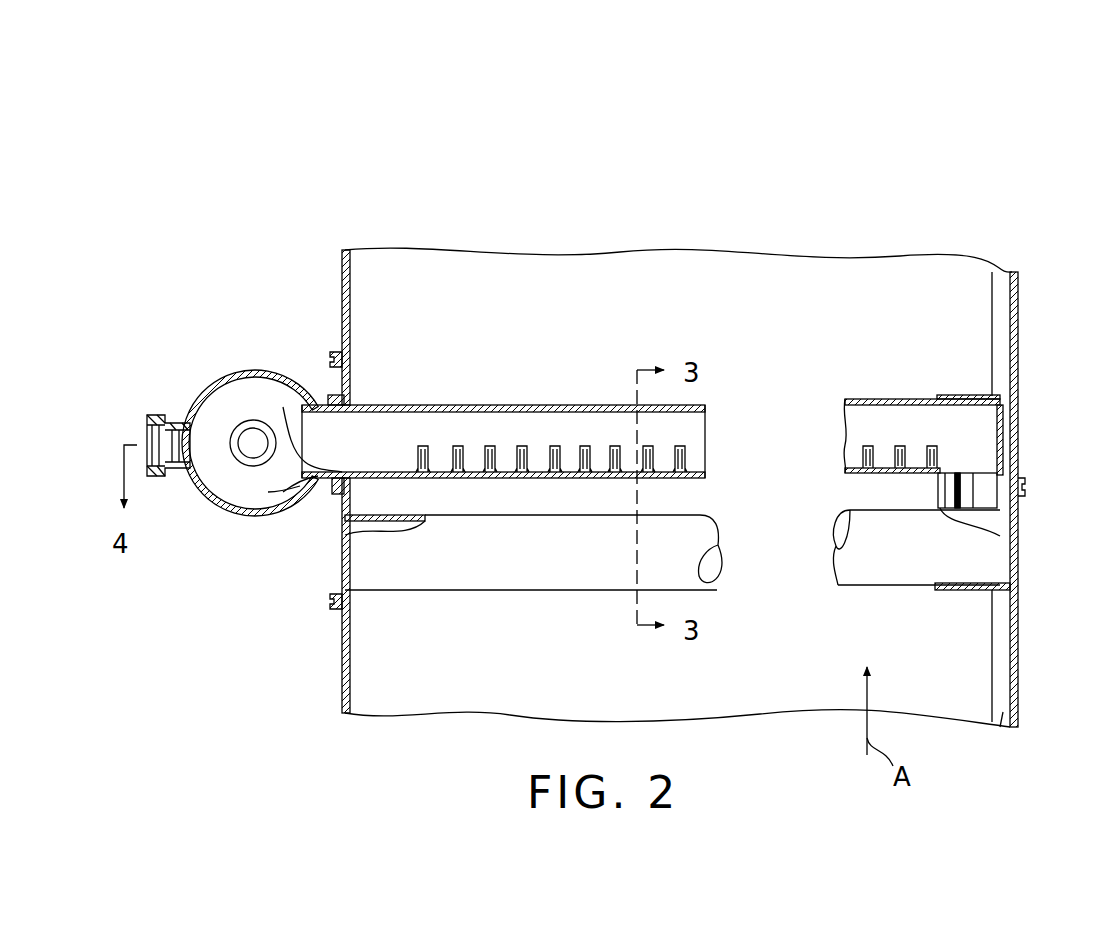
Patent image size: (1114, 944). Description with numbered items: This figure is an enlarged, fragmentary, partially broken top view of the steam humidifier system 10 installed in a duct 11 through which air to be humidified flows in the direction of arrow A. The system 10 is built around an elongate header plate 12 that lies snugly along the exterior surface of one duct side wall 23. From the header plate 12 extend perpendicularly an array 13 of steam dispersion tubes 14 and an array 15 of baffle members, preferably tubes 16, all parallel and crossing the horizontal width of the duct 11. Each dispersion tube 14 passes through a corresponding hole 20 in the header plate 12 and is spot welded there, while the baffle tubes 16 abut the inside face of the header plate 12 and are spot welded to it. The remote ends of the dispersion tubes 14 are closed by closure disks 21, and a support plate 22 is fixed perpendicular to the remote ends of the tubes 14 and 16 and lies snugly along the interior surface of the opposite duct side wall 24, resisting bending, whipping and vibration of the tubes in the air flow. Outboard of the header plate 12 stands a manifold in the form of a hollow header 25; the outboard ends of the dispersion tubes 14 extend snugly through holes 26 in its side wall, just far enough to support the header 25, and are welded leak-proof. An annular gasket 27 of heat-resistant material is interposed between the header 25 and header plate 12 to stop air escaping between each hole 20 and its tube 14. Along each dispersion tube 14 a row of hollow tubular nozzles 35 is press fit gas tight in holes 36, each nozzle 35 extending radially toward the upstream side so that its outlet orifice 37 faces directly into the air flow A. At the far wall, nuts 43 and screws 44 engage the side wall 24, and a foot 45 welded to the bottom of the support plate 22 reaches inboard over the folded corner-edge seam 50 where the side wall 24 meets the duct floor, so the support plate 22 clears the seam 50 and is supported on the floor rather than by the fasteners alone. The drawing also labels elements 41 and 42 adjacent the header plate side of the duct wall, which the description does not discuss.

The steam humidifier system 10 is at (218, 325).
The duct 11 is at (1020, 324).
The header plate 12 is at (342, 576).
The array of steam dispersion tubes 13 is at (503, 402).
The steam dispersion tubes 14 is at (437, 405).
The array of baffle members 15 is at (407, 592).
The baffle tubes 16 is at (677, 581).
The holes 20 is at (252, 466).
The closure disks 21 is at (973, 430).
The support plate 22 is at (1019, 430).
The duct side wall 23 is at (342, 275).
The opposite duct side wall 24 is at (1019, 368).
The hollow header 25 is at (206, 503).
The holes 26 is at (273, 493).
The annular gasket 27 is at (333, 491).
The hollow tubular nozzles 35 is at (551, 431).
The hole 36 is at (551, 480).
The outlet orifice 37 is at (562, 480).
The clip 41 is at (348, 597).
The clip 42 is at (332, 358).
The nuts 43 is at (934, 477).
The screws 44 is at (1026, 486).
The foot 45 is at (938, 492).
The folded corner-edge structure 50 is at (1006, 718).